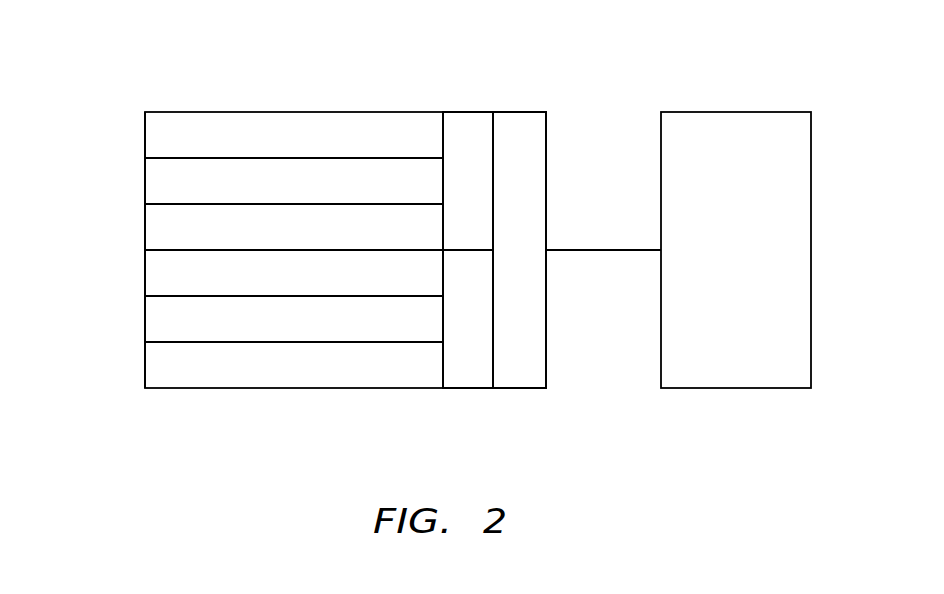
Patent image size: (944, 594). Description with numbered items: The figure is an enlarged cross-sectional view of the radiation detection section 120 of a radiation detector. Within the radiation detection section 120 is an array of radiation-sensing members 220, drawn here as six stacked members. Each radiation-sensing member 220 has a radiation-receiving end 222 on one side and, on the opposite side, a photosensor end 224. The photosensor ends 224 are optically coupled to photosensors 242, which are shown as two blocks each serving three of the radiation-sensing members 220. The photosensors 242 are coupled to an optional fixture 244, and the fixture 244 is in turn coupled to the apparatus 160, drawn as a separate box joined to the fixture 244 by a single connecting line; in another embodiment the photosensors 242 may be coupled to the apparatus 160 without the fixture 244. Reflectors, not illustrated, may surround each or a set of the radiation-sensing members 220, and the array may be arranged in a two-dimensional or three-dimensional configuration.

The radiation detection section 120 is at (143, 93).
The apparatus 160 is at (717, 262).
The radiation-sensing member 220 is at (238, 377).
The radiation-receiving end 222 is at (100, 250).
The photosensor end 224 is at (397, 250).
The photosensor 242 is at (484, 343).
The fixture 244 is at (534, 270).